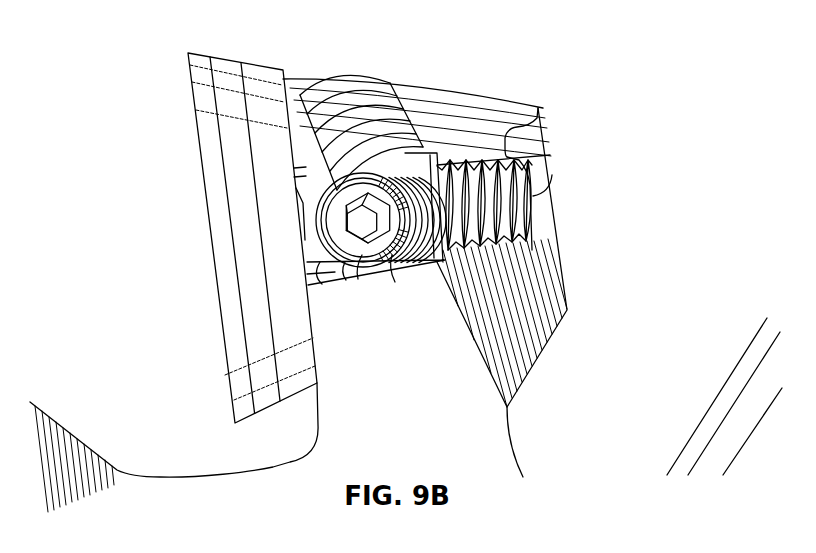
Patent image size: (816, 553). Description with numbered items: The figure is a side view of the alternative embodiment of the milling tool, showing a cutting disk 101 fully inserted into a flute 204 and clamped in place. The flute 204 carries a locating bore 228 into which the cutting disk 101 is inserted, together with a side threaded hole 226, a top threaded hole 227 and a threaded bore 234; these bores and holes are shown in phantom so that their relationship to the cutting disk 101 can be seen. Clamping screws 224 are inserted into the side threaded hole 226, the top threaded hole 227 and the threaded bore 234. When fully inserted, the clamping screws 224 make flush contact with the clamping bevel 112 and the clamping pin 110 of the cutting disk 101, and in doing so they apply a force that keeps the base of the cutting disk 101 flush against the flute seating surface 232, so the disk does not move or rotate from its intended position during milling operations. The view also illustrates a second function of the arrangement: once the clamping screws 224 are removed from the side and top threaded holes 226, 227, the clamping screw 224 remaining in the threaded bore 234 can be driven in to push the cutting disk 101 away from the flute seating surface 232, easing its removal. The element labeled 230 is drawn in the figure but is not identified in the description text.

The cutting disk 101 is at (227, 60).
The clamping pin 110 is at (303, 203).
The clamping bevel 112 is at (375, 280).
The flute 204 is at (450, 88).
The clamping screws 224 is at (370, 80).
The side threaded hole 226 is at (334, 283).
The top threaded hole 227 is at (322, 92).
The locating bore 228 is at (395, 282).
The top edge 230 is at (283, 77).
The flute seating surface 232 is at (317, 355).
The threaded bore 234 is at (538, 108).